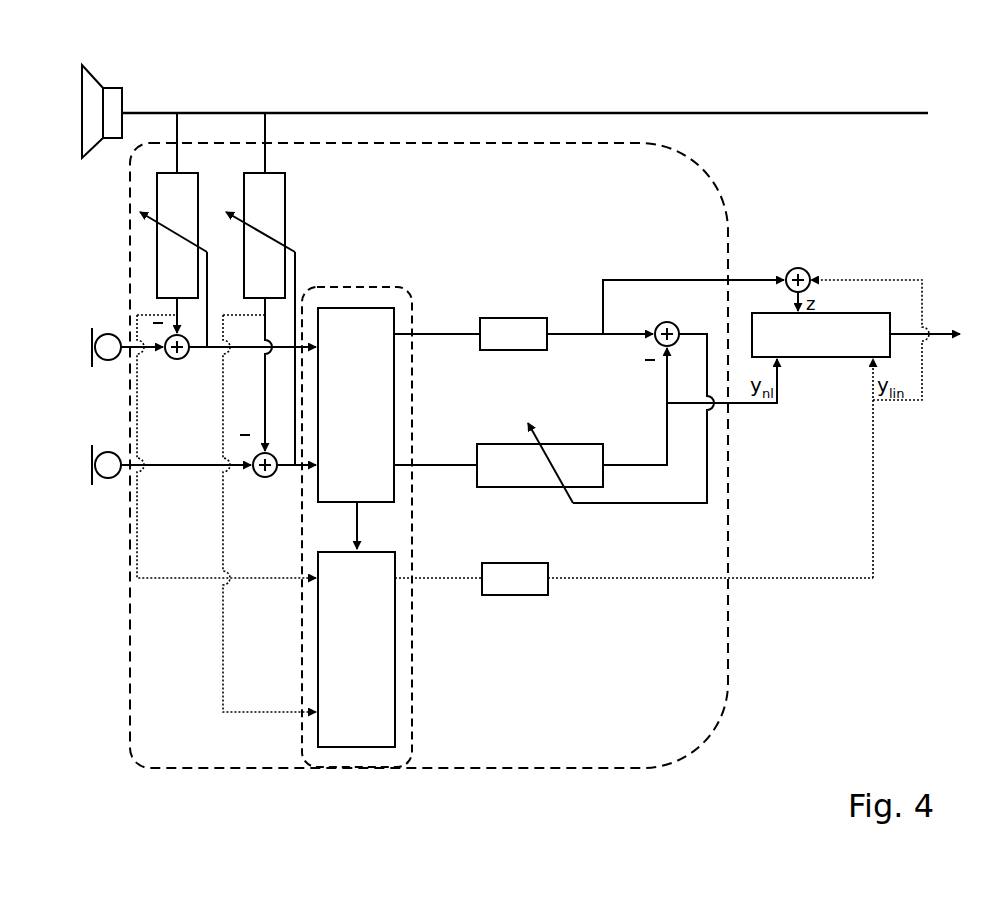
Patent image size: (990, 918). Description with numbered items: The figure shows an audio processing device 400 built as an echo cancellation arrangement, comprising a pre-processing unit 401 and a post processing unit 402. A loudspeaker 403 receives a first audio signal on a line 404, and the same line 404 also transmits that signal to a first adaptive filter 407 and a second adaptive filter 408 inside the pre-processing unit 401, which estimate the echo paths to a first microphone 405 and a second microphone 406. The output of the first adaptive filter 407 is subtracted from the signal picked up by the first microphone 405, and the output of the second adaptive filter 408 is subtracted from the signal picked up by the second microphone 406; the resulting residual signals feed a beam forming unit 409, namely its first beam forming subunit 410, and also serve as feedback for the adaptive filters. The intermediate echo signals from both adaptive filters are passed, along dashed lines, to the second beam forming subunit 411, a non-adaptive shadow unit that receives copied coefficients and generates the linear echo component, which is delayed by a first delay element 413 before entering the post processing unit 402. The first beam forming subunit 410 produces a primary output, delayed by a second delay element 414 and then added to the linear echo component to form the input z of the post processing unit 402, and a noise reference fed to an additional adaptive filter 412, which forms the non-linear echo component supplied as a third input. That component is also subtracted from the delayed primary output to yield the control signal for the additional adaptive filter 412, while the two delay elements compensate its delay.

The device 400 is at (862, 56).
The pre-processing unit 401 is at (322, 142).
The post processing unit 402 is at (850, 313).
The loudspeaker 403 is at (98, 80).
The line 404 is at (490, 112).
The first microphone 405 is at (102, 445).
The second microphone 406 is at (102, 326).
The first adaptive filter 407 is at (285, 200).
The second adaptive filter 408 is at (157, 194).
The beam forming unit 409 is at (378, 287).
The first beam forming subunit 410 is at (394, 390).
The second beam forming subunit 411 is at (395, 700).
The additional adaptive filter 412 is at (580, 444).
The first delay element 413 is at (537, 596).
The second delay element 414 is at (534, 318).